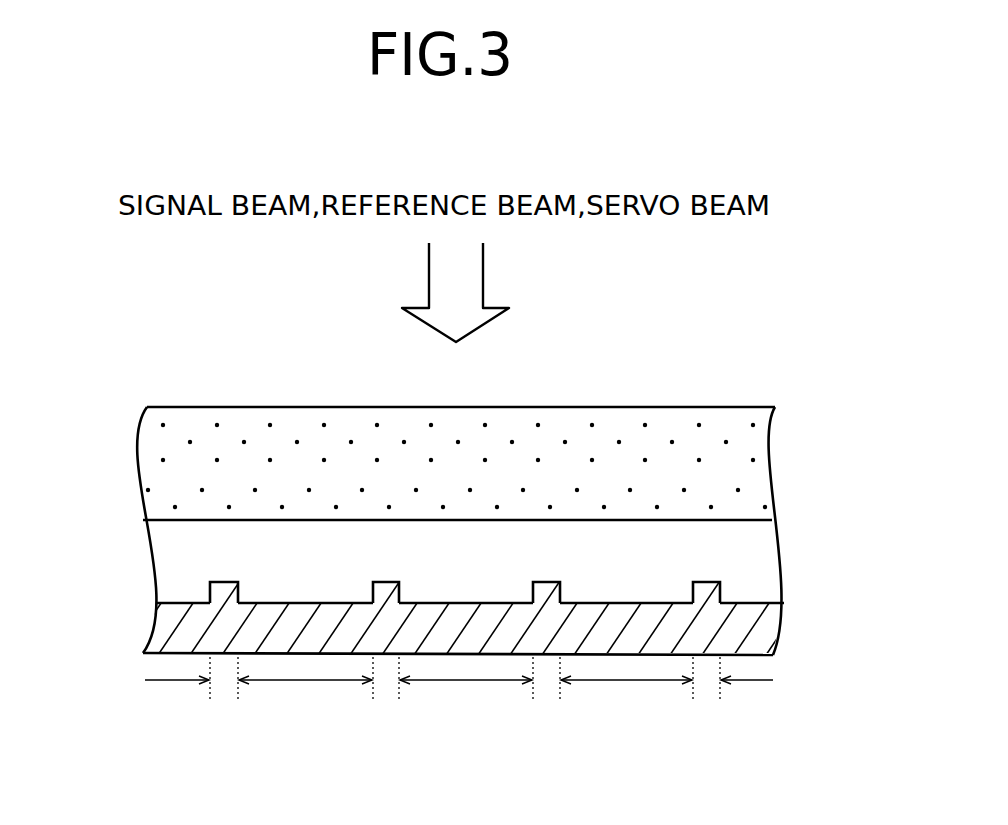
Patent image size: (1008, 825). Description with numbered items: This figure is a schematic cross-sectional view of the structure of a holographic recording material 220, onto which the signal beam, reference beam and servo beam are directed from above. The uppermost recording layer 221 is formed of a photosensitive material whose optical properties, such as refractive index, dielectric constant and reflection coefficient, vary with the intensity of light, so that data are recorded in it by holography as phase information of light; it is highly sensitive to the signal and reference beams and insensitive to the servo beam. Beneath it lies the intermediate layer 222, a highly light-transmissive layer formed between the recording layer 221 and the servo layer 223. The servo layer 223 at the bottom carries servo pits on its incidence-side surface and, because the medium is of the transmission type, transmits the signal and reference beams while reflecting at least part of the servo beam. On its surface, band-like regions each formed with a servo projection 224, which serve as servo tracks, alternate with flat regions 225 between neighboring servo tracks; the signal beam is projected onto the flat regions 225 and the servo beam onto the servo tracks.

The holographic recording material 220 is at (806, 421).
The recording layer 221 is at (148, 464).
The intermediate layer 222 is at (160, 553).
The servo layer 223 is at (165, 635).
The servo projection 224 is at (226, 582).
The flat region 225 is at (459, 689).